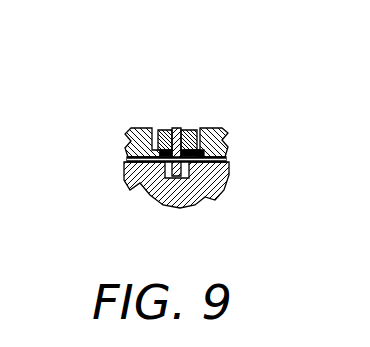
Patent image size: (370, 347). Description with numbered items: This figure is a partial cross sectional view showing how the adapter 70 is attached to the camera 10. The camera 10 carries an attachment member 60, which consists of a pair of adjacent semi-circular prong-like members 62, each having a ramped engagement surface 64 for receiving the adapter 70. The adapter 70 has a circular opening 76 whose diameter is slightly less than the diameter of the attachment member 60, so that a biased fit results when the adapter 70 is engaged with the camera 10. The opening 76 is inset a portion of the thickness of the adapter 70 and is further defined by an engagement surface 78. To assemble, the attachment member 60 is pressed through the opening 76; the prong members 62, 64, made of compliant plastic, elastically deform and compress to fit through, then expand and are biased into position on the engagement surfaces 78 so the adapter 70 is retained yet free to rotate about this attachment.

The camera 10 is at (131, 185).
The attachment member 60 is at (173, 127).
The prong-like members 62 is at (163, 129).
The ramped engagement surface 64 is at (190, 129).
The adapter 70 is at (132, 130).
The circular opening 76 is at (224, 158).
The engagement surface 78 is at (199, 129).